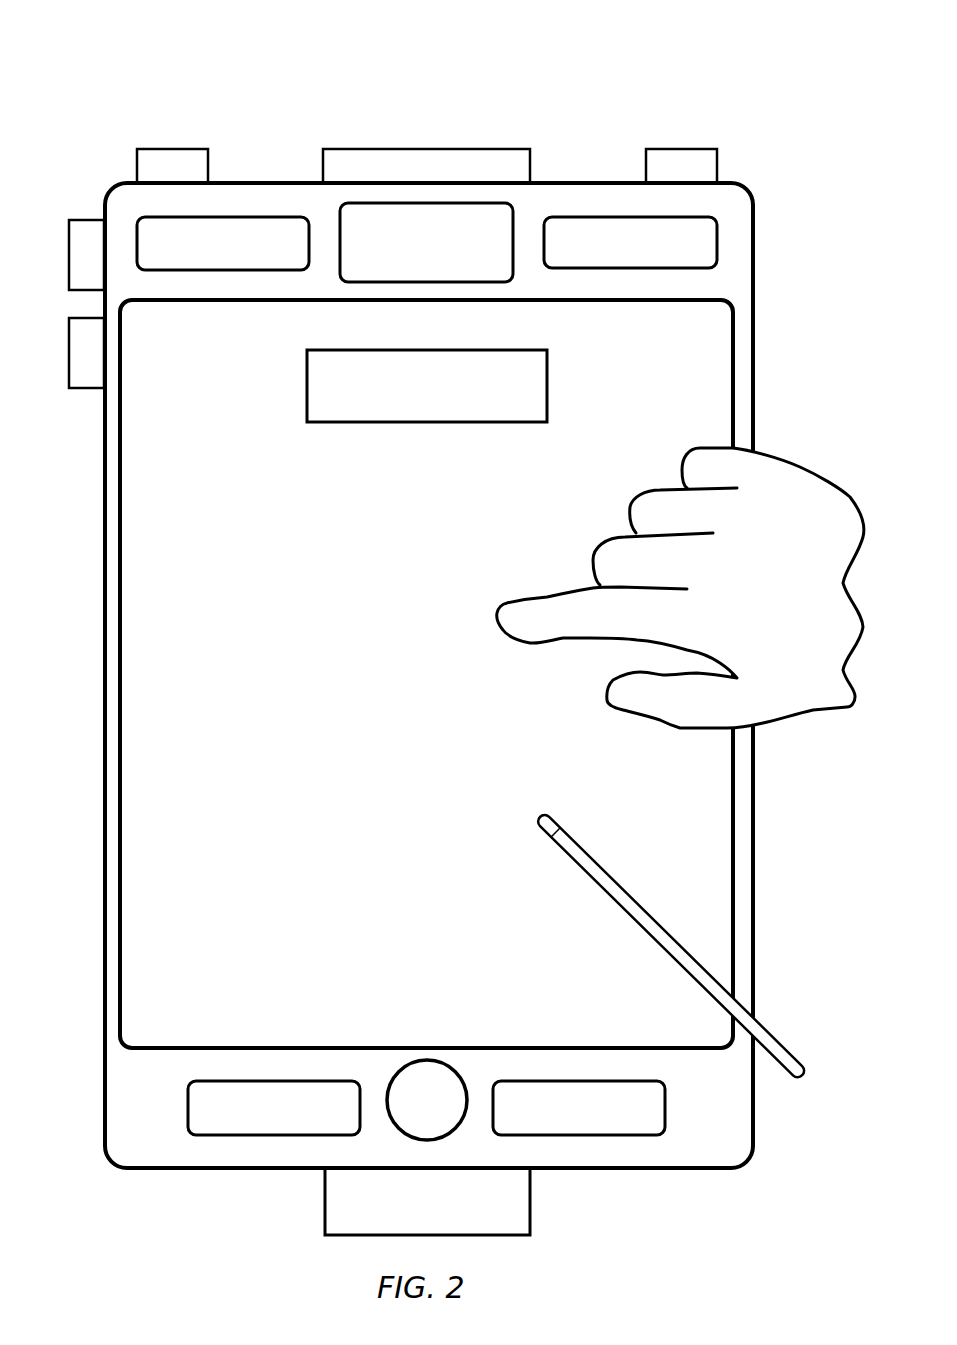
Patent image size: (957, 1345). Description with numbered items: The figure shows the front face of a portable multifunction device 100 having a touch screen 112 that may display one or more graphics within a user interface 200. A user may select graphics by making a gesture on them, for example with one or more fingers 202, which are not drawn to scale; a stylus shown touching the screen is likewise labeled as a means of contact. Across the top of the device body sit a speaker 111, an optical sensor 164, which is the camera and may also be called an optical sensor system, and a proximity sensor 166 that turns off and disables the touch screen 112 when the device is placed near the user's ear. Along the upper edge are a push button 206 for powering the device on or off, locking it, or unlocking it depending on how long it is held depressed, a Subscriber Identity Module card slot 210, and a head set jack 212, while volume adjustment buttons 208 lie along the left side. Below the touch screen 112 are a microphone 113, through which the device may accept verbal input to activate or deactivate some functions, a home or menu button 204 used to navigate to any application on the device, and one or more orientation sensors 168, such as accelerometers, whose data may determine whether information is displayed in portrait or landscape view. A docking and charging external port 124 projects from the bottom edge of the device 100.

The portable multifunction device 100 is at (588, 118).
The user interface 200 is at (733, 337).
The push button 206 is at (172, 166).
The Subscriber Identity Module (SIM) card slot 210 is at (426, 166).
The head set jack 212 is at (681, 166).
The volume adjustment button(s) 208 is at (86, 304).
The speaker 111 is at (223, 243).
The optical sensor 164 is at (426, 242).
The proximity sensor 166 is at (630, 242).
The touch screen 112 is at (426, 674).
The fingers 202 is at (540, 812).
The microphone 113 is at (274, 1108).
The menu button 204 is at (427, 1100).
The orientation sensors 168 is at (579, 1108).
The external port 124 is at (427, 1201).